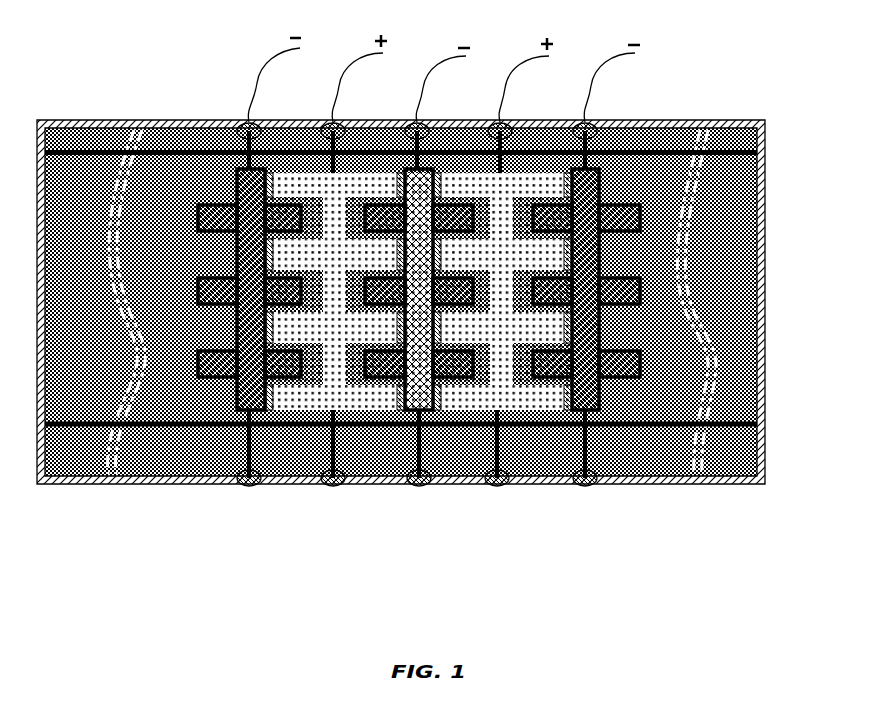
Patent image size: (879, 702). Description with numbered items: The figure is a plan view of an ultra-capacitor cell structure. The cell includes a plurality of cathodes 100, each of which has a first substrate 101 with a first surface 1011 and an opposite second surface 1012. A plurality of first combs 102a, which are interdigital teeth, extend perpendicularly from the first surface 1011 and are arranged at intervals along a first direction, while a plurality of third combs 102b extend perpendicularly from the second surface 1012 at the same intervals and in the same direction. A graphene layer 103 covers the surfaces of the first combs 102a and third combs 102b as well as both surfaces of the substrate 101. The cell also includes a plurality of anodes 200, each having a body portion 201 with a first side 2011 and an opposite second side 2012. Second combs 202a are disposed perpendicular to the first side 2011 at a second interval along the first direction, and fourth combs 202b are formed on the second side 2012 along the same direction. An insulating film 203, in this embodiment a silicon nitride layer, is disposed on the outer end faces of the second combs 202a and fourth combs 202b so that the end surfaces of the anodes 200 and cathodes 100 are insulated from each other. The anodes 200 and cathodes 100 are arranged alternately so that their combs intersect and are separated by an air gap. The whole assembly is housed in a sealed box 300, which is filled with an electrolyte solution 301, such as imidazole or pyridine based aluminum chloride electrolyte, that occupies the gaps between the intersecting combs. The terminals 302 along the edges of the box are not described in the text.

The cathode 100 is at (413, 305).
The first substrate 101 is at (235, 370).
The first comb 102a is at (282, 353).
The third comb 102b is at (198, 362).
The graphene layer 103 is at (182, 367).
The first surface 1011 is at (263, 194).
The second surface 1012 is at (222, 285).
The anode 200 is at (355, 325).
The body portion 201 is at (332, 357).
The side of body portion 2011 is at (303, 265).
The second side 2012 is at (349, 192).
The second comb 202a is at (298, 392).
The fourth comb 202b is at (367, 387).
The insulating film 203 is at (414, 405).
The sealed box 300 is at (712, 100).
The electrolyte solution 301 is at (714, 243).
The terminal 302 is at (577, 480).